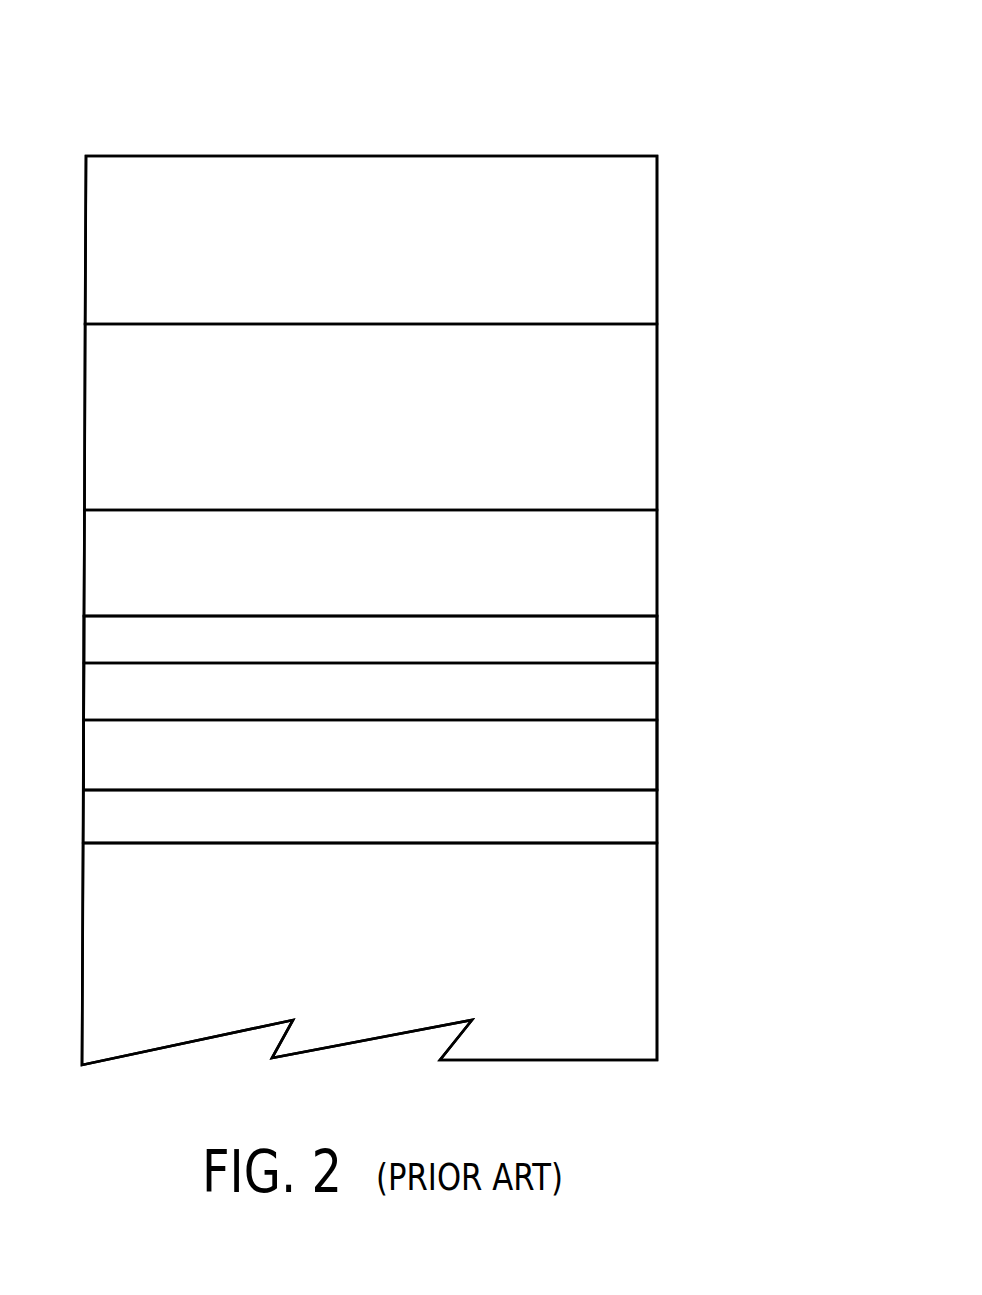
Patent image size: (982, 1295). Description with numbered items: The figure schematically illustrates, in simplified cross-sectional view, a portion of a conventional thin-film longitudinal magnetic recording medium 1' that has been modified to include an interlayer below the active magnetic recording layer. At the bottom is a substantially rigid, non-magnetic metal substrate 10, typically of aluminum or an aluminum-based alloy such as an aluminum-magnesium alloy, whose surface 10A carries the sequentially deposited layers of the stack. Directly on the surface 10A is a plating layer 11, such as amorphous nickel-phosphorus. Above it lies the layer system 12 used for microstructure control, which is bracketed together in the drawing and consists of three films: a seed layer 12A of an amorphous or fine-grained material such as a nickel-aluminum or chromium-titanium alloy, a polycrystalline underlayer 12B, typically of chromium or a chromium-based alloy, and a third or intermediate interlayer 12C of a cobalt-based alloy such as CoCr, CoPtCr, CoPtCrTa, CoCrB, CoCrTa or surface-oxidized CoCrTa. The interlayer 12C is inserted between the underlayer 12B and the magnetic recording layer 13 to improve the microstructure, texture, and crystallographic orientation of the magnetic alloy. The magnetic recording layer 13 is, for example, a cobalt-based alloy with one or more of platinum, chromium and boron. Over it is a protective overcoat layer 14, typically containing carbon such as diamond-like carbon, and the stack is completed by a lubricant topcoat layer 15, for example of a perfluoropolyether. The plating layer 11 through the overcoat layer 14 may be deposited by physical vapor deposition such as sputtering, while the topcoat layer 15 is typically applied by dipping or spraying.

The longitudinal magnetic recording medium 1' is at (369, 532).
The non-magnetic metal substrate 10 is at (662, 957).
The surface 10A is at (600, 844).
The plating layer 11 is at (662, 813).
The layer system 12 is at (805, 630).
The seed layer 12A is at (662, 748).
The polycrystalline underlayer 12B is at (662, 690).
The interlayer 12C is at (662, 642).
The magnetic recording layer 13 is at (662, 570).
The protective overcoat layer 14 is at (662, 413).
The lubricant topcoat layer 15 is at (662, 235).